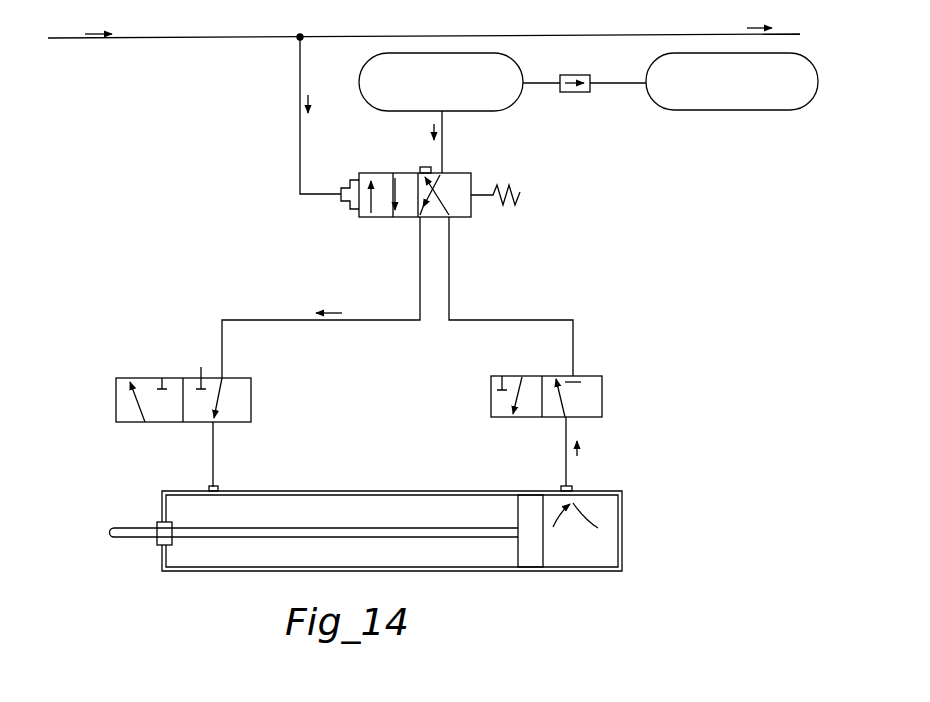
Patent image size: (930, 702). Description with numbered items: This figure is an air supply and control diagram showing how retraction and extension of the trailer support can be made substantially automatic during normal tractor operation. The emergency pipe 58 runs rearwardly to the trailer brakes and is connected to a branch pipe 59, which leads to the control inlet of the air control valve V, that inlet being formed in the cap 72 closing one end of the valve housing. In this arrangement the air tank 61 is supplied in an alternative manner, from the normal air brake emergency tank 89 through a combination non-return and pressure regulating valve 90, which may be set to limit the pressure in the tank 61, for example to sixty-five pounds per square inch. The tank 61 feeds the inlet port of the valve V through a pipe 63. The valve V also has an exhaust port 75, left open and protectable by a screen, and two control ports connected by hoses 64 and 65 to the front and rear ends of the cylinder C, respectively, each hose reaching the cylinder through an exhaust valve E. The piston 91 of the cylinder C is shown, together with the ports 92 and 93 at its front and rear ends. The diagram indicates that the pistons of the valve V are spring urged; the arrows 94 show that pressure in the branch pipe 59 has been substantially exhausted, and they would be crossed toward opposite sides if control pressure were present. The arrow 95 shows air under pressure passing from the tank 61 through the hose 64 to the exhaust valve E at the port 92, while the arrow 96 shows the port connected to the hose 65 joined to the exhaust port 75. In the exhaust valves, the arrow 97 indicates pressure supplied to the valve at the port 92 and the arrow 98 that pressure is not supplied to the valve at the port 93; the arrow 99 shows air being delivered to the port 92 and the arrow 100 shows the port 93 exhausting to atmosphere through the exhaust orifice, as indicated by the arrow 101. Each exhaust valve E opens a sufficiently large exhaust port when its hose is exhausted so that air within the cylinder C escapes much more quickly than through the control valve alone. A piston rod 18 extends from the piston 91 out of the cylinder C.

The emergency pipe 58 is at (225, 37).
The branch pipe 59 is at (300, 140).
The air tank 61 is at (452, 97).
The air brake emergency tank 89 is at (756, 96).
The combination non-return and pressure regulating valve 90 is at (566, 95).
The pipe 63 is at (443, 142).
The air control valve V is at (382, 219).
The cap 72 is at (347, 206).
The exhaust port 75 is at (424, 168).
The arrows 94 is at (386, 173).
The arrow 95 is at (441, 187).
The arrow 96 is at (450, 206).
The hose 64 is at (420, 262).
The hose 65 is at (449, 272).
The arrow 97 is at (128, 380).
The arrow 99 is at (224, 385).
The arrow 100 is at (565, 402).
The arrow 98 is at (508, 376).
The arrow 101 is at (552, 370).
The exhaust valve E is at (115, 396).
The cylinder C is at (380, 488).
The piston 91 is at (533, 505).
The piston rod 18 is at (135, 530).
The port 92 is at (213, 487).
The port 93 is at (573, 484).